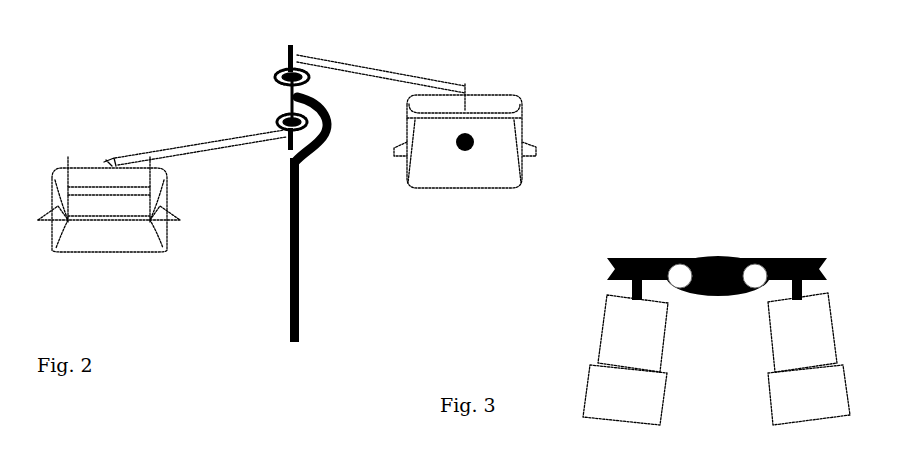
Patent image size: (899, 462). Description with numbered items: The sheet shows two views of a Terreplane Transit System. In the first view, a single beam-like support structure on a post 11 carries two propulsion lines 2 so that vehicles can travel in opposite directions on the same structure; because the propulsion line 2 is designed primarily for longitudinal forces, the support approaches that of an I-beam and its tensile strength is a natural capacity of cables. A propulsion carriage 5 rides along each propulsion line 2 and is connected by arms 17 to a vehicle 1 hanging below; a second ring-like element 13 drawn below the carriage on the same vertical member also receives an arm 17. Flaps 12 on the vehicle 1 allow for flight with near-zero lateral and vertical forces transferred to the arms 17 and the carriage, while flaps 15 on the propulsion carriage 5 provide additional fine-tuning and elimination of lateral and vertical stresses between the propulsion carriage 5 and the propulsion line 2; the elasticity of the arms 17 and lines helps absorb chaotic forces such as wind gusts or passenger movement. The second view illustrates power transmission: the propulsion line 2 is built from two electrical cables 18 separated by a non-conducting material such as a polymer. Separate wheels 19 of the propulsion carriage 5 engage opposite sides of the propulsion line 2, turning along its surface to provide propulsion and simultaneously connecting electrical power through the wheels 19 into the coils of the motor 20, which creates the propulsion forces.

In FIG. 2, the vehicle 1 is at (280, 173).
In FIG. 2, the propulsion line 2 is at (303, 84).
In FIG. 3, the propulsion line 2 is at (724, 252).
In FIG. 2, the propulsion carriage 5 is at (280, 80).
In FIG. 2, the post 11 is at (307, 250).
In FIG. 2, the flaps 12 is at (396, 150).
In FIG. 2, the lower ring 13 is at (284, 122).
In FIG. 2, the flaps 15 is at (295, 50).
In FIG. 2, the arms 17 is at (227, 140).
In FIG. 3, the electrical cables 18 is at (758, 270).
In FIG. 3, the wheels 19 is at (808, 262).
In FIG. 3, the motor 20 is at (718, 359).